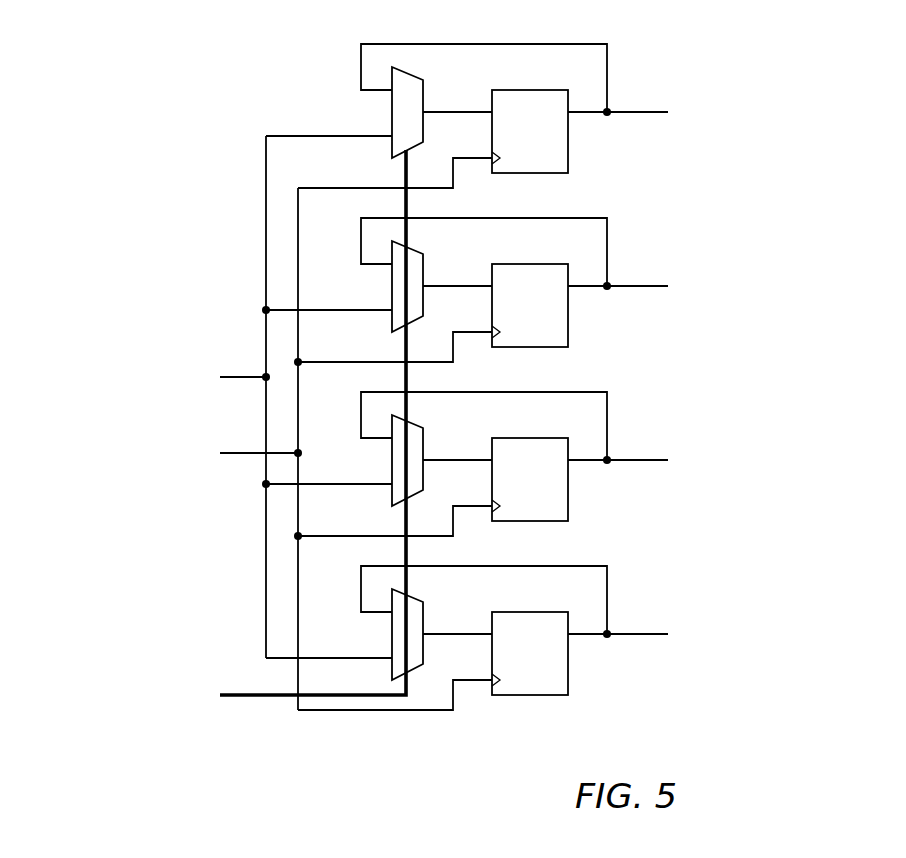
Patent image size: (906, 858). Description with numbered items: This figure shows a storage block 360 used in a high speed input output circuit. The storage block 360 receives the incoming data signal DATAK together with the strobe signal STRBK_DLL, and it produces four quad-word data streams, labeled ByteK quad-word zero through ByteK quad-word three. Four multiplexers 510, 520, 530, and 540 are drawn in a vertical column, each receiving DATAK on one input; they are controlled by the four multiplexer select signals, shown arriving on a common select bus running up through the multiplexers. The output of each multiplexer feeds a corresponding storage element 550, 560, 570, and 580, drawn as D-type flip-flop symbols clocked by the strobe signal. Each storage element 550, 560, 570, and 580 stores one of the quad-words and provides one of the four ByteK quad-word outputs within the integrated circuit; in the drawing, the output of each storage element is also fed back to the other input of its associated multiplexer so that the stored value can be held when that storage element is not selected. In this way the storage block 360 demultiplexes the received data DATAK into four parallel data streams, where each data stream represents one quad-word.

The storage block 360 is at (166, 134).
The multiplexer 510 is at (423, 90).
The multiplexer 520 is at (423, 264).
The multiplexer 530 is at (423, 438).
The multiplexer 540 is at (423, 612).
The storage element 550 is at (568, 169).
The storage element 560 is at (568, 343).
The storage element 570 is at (568, 517).
The storage element 580 is at (568, 691).